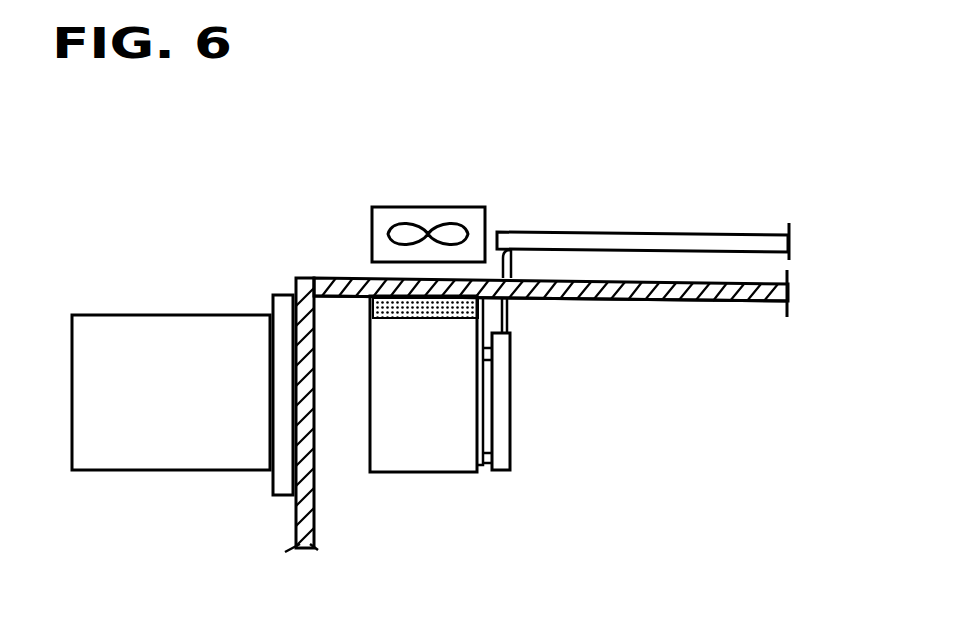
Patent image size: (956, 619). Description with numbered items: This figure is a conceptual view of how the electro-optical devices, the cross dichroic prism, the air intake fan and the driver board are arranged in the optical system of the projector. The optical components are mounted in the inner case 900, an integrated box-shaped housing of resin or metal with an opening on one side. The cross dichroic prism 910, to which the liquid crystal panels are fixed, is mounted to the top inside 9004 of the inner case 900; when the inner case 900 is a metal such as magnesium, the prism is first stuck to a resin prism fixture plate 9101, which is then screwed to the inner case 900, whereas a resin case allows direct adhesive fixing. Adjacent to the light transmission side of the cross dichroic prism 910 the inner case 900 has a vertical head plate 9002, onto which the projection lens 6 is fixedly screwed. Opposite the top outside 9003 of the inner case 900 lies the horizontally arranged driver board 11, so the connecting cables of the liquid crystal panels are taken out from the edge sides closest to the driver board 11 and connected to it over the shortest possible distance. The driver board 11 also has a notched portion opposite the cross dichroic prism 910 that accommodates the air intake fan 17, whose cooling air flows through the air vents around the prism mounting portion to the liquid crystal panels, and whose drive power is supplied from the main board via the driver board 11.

The projection lens 6 is at (142, 313).
The head plate 9002 is at (291, 526).
The inner case 900 is at (295, 270).
The top outside of the inner case 9003 is at (753, 284).
The top inside of the inner case 9004 is at (715, 301).
The air intake fan 17 is at (438, 206).
The driver board 11 is at (630, 232).
The prism fixture plate 9101 is at (402, 298).
The cross dichroic prism 910 is at (422, 475).